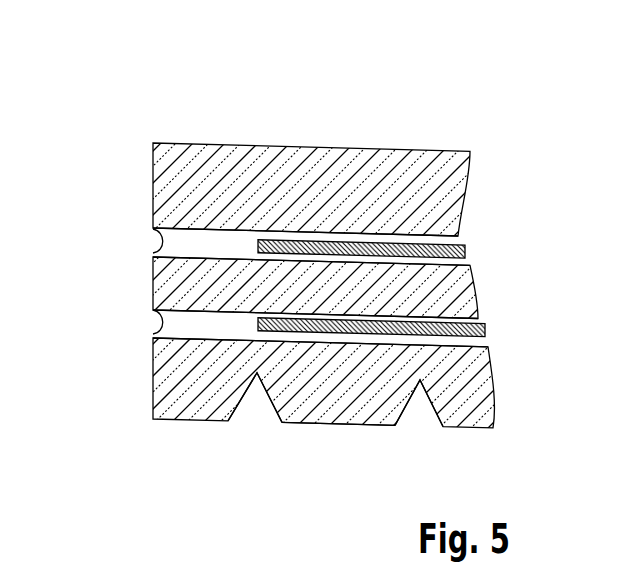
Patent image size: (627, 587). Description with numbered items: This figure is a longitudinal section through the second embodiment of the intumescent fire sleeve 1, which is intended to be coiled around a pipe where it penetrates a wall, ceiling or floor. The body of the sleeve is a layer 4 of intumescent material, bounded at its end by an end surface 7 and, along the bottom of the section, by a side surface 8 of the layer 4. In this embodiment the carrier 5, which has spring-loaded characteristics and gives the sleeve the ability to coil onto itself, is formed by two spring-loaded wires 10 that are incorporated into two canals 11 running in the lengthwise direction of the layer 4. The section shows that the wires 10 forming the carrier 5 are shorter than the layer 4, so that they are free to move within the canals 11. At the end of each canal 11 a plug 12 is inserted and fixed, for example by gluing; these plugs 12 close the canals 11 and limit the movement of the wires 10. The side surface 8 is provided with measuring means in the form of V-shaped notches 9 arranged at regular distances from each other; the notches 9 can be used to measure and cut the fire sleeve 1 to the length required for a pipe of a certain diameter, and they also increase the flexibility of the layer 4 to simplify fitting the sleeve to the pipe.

The fire sleeve 1 is at (313, 269).
The layer of intumescent material 4 is at (183, 398).
The carrier 5 is at (434, 311).
The end surface 7 is at (145, 156).
The side surface 8 is at (334, 434).
The V-shaped notch 9 is at (257, 376).
The spring-loaded wire 10 is at (466, 250).
The canal 11 is at (207, 243).
The plug 12 is at (152, 243).